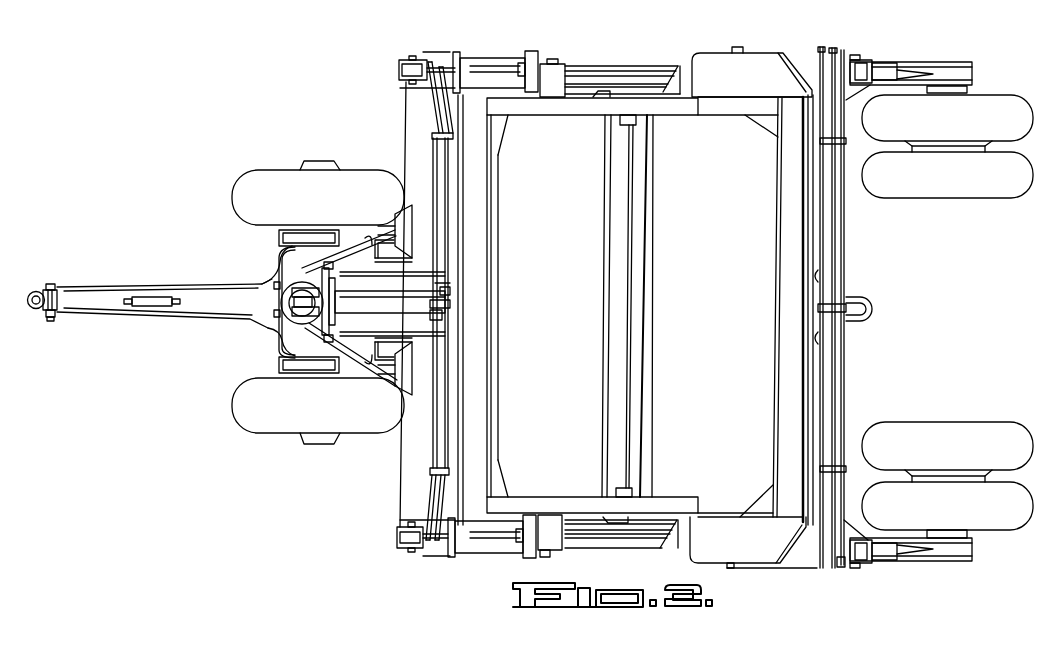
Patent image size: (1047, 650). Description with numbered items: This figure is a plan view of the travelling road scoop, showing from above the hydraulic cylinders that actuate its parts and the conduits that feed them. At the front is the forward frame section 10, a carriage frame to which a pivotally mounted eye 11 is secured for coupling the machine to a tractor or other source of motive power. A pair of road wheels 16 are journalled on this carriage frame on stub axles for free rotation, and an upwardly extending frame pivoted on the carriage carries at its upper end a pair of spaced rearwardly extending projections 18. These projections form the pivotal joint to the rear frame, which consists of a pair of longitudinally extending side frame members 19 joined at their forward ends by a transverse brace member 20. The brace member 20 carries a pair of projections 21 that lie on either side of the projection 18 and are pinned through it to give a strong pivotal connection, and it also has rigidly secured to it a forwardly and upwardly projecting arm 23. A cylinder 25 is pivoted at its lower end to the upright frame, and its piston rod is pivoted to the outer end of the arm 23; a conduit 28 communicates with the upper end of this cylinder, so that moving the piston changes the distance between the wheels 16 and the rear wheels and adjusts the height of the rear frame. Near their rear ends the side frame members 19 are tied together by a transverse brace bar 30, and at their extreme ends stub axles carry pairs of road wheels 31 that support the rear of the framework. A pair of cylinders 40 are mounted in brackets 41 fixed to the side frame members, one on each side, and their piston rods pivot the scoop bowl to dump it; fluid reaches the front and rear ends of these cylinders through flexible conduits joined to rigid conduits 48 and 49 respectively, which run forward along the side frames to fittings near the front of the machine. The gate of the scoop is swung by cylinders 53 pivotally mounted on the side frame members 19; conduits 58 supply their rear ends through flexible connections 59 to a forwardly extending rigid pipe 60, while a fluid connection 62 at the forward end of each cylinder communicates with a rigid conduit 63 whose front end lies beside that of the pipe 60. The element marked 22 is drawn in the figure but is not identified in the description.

The forward frame section 10 is at (290, 345).
The pivotally mounted eye 11 is at (44, 288).
The road wheels 16 is at (270, 170).
The rearwardly extending projections 18 is at (375, 230).
The side frame members 19 is at (913, 64).
The brace member 20 is at (410, 490).
The projections 21 is at (411, 210).
The tongue 22 is at (280, 322).
The arm 23 is at (412, 305).
The cylinder 25 is at (292, 301).
The conduit 28 is at (276, 280).
The brace bar 30 is at (818, 262).
The road wheels 31 is at (947, 312).
The cylinders 40 is at (808, 62).
The brackets 41 is at (872, 60).
The rigid conduit 48 is at (300, 272).
The rigid conduit 49 is at (312, 325).
The cylinders 53 is at (490, 58).
The conduits 58 is at (478, 557).
The flexible connections 59 is at (445, 495).
The rigid pipe 60 is at (428, 290).
The fluid connection 62 is at (397, 537).
The rigid conduit 63 is at (418, 318).